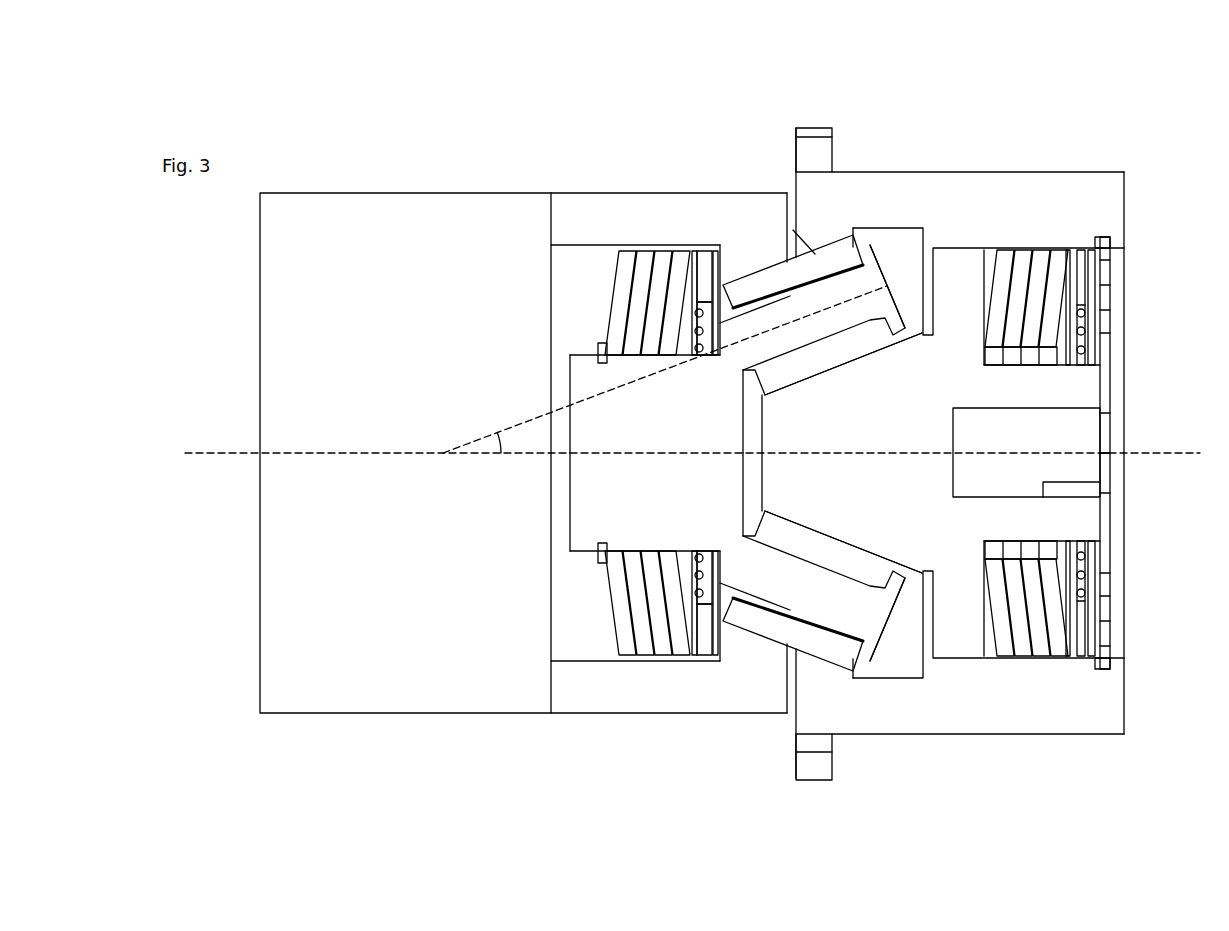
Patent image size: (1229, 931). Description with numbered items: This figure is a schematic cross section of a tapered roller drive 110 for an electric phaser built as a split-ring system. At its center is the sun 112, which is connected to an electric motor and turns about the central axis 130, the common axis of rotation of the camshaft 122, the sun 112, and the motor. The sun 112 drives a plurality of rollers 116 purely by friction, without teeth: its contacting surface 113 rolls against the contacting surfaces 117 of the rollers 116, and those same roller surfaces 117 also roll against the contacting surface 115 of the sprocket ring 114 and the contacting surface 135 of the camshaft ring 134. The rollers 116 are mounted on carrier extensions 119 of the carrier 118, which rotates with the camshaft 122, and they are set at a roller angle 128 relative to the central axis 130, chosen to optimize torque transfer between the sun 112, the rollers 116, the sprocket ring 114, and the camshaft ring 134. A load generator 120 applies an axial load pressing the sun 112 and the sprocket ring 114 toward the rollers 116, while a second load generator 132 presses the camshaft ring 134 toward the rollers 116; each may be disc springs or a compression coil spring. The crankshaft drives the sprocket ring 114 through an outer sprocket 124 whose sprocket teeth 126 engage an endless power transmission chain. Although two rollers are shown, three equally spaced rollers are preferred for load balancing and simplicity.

The tapered roller drive 110 is at (1148, 131).
The sun 112 is at (878, 503).
The contacting surface of the sun 113 is at (838, 542).
The sprocket ring 114 is at (805, 232).
The contacting surface of the sprocket ring 115 is at (812, 278).
The rollers 116 is at (862, 569).
The contacting surface of the rollers 117 is at (808, 262).
The carrier 118 is at (642, 497).
The carrier extensions 119 is at (838, 292).
The load generator 120 is at (1003, 645).
The camshaft 122 is at (422, 576).
The outer sprocket 124 is at (812, 153).
The sprocket teeth 126 is at (815, 133).
The roller angle 128 is at (665, 369).
The central axis 130 is at (672, 455).
The second load generator 132 is at (680, 638).
The camshaft ring 134 is at (736, 261).
The contacting surface of the camshaft ring 135 is at (770, 272).